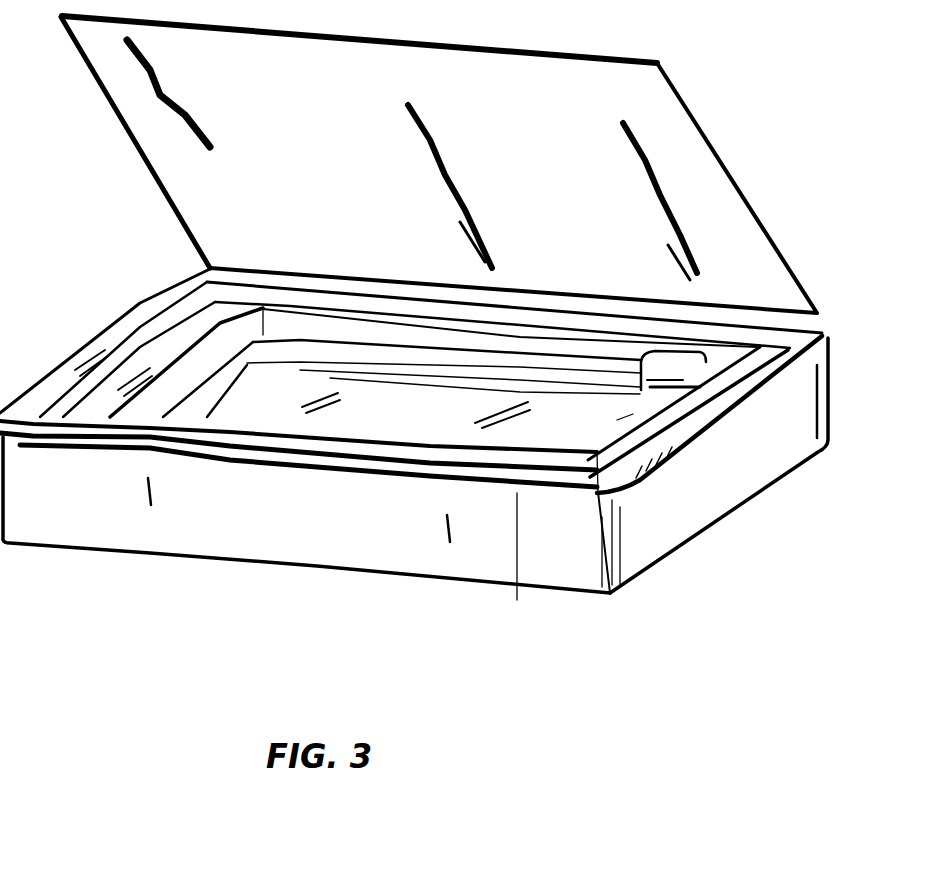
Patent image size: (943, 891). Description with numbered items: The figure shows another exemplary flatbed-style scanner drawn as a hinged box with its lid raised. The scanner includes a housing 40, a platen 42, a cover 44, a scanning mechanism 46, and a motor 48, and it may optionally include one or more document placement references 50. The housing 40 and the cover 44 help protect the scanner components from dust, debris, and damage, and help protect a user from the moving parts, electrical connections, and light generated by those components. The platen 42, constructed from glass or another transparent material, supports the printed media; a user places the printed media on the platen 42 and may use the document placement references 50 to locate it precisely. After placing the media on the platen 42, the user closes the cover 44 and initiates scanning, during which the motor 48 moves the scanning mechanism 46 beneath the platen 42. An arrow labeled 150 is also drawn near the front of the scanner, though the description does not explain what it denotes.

The housing 40 is at (80, 545).
The platen 42 is at (685, 430).
The cover 44 is at (180, 168).
The scanning mechanism 46 is at (185, 340).
The motor 48 is at (823, 340).
The document placement reference 50 is at (618, 420).
The scan direction arrow 150 is at (627, 644).